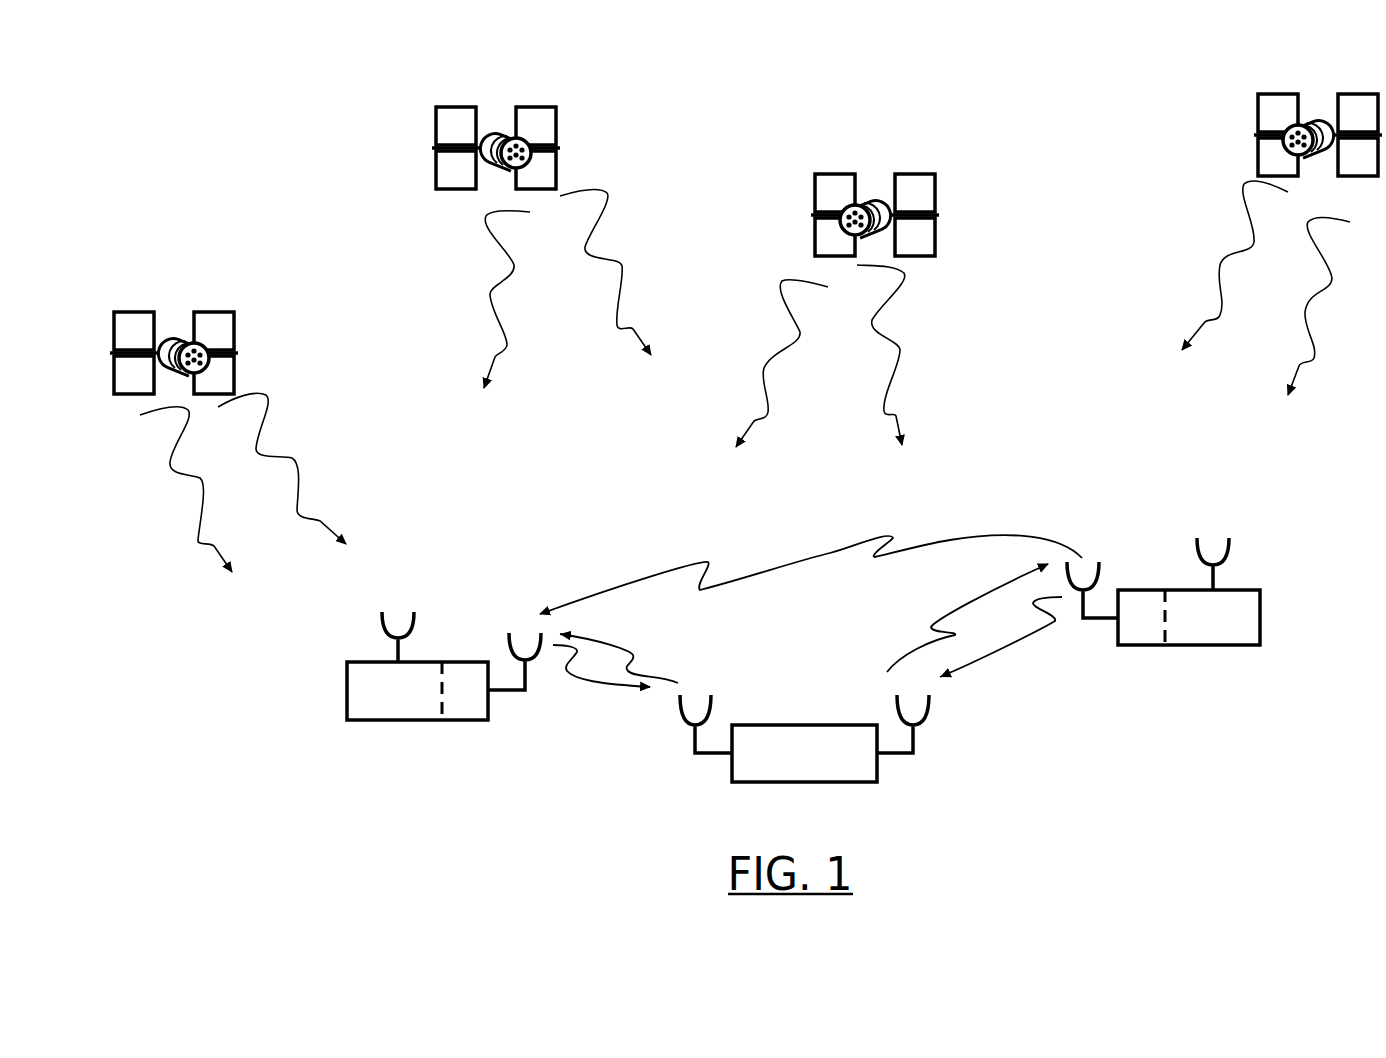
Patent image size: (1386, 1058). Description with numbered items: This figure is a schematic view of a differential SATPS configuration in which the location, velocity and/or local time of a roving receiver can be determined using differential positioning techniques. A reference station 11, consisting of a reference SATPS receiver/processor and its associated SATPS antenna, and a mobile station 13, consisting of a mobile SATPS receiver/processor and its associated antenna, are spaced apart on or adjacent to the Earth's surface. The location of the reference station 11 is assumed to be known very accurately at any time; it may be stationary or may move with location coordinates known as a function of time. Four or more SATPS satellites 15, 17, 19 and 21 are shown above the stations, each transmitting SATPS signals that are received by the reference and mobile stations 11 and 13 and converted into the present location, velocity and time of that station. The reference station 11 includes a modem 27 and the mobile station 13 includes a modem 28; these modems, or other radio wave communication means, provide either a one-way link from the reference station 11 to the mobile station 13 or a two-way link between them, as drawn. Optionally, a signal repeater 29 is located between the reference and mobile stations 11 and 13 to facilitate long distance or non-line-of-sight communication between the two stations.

The reference station 11 is at (440, 682).
The mobile station 13 is at (1165, 607).
The SATPS satellite 15 is at (185, 343).
The SATPS satellite 17 is at (500, 138).
The SATPS satellite 19 is at (872, 200).
The SATPS satellite 21 is at (1312, 130).
The modem 27 is at (462, 688).
The modem 28 is at (1144, 613).
The signal repeater 29 is at (822, 745).